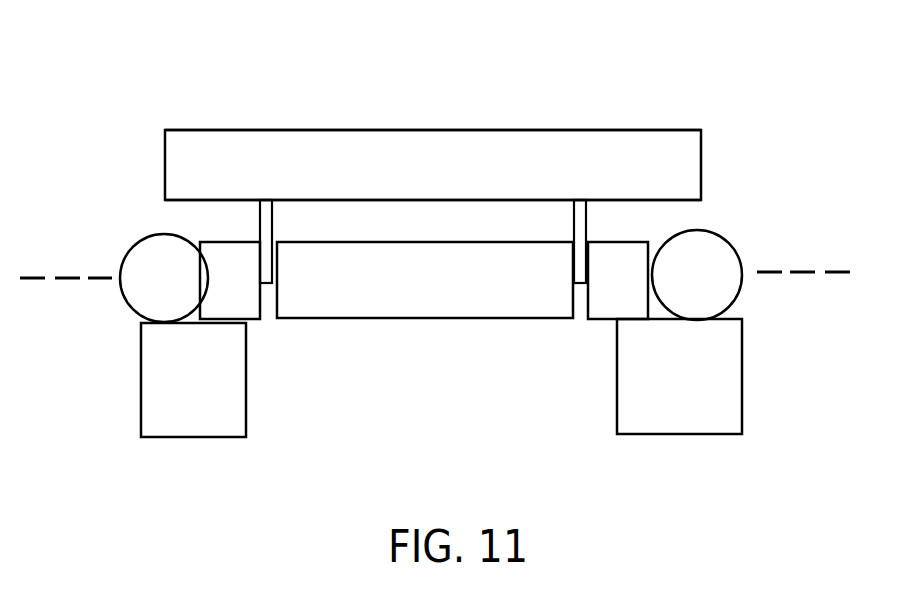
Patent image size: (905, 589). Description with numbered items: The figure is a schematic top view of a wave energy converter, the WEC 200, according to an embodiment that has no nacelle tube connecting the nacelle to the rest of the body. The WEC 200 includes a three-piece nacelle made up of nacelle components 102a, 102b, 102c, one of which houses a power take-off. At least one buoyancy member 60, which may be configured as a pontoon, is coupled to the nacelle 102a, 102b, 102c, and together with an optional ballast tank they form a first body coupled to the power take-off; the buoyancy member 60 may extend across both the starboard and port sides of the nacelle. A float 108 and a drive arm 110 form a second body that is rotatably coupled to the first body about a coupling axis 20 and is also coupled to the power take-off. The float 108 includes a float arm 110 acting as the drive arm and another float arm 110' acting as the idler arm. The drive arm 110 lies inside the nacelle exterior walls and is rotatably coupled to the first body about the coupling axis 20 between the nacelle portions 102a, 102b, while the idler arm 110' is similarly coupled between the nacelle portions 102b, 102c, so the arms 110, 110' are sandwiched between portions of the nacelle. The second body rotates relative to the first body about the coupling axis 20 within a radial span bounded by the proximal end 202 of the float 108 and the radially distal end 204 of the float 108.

The WEC 200 is at (671, 60).
The float 108 is at (230, 130).
The radially distal end of the float 204 is at (553, 130).
The proximal end of the float 202 is at (453, 200).
The drive arm 110 is at (230, 241).
The idler arm 110' is at (618, 241).
The nacelle component 102a is at (250, 312).
The nacelle component 102b is at (425, 307).
The nacelle component 102c is at (605, 313).
The buoyancy member 60 is at (742, 352).
The coupling axis 20 is at (837, 270).